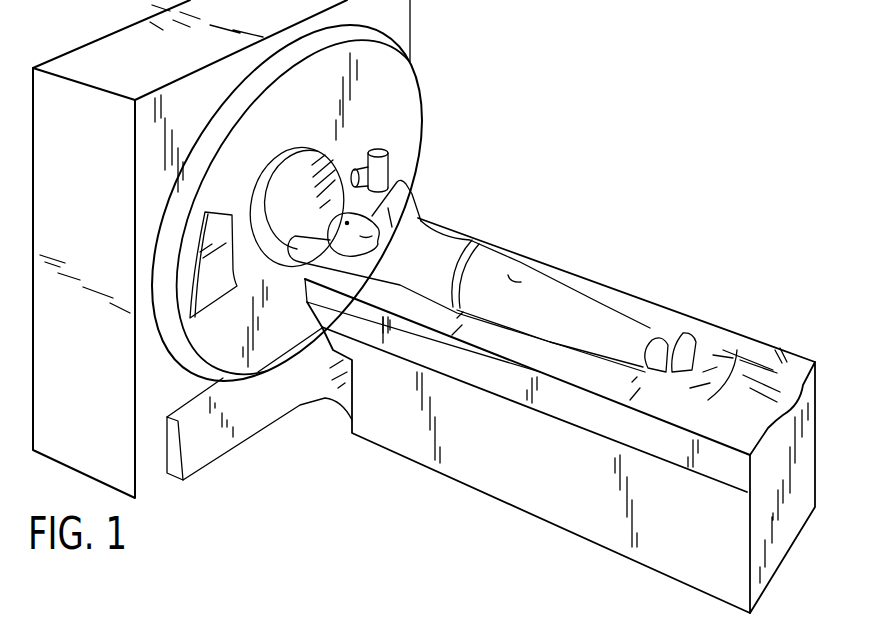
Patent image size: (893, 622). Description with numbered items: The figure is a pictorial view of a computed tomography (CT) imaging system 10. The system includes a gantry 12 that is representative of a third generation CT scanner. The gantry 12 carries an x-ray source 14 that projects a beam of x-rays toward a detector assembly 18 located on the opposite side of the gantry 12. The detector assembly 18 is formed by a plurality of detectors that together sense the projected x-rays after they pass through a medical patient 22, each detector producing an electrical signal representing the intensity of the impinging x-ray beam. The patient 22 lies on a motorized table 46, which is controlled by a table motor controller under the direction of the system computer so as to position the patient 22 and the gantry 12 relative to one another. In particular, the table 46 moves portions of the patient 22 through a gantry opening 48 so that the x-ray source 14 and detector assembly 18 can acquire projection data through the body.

The computed tomography (CT) imaging system 10 is at (543, 146).
The gantry 12 is at (398, 123).
The x-ray source 14 is at (389, 169).
The detector assembly 18 is at (215, 303).
The medical patient 22 is at (449, 247).
The motorized table 46 is at (544, 503).
The gantry opening 48 is at (283, 199).